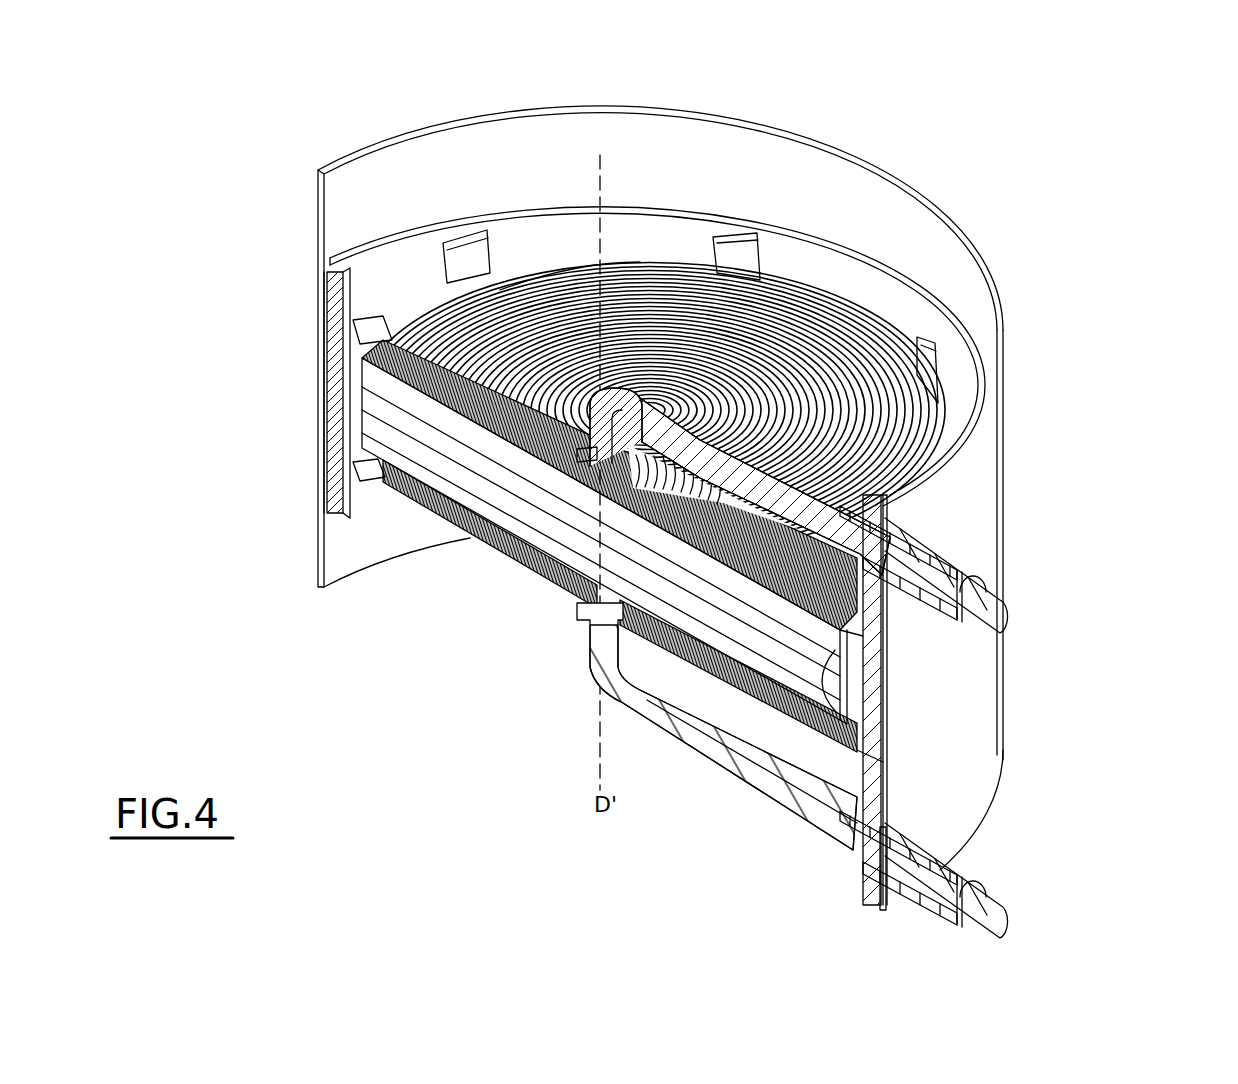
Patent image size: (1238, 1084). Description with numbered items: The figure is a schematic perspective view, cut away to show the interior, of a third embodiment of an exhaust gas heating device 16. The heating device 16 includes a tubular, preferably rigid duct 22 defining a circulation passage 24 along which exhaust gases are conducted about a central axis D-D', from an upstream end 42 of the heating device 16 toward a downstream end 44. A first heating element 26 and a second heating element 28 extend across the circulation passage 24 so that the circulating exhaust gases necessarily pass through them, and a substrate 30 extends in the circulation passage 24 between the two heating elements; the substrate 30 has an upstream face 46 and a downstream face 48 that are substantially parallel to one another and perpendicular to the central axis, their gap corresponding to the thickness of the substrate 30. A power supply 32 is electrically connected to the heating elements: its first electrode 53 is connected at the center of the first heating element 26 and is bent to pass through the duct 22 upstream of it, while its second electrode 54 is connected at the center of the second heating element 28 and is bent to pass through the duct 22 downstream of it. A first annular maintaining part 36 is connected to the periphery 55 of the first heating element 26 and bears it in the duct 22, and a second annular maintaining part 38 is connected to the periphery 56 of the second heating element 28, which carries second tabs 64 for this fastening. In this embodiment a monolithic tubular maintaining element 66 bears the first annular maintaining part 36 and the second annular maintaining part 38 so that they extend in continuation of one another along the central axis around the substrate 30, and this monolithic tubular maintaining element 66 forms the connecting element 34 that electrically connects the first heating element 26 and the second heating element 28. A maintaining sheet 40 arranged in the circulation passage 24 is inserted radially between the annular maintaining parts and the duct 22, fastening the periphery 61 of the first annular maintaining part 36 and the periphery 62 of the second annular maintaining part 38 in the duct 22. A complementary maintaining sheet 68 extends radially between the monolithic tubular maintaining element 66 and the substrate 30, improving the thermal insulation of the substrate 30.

The heating device 16 is at (1050, 211).
The duct 22 is at (958, 290).
The circulation passage 24 is at (512, 632).
The first heating element 26 is at (800, 727).
The second heating element 28 is at (925, 413).
The substrate 30 is at (850, 716).
The power supply 32 is at (1012, 576).
The connecting element 34 is at (320, 556).
The first annular maintaining part 36 is at (338, 482).
The second annular maintaining part 38 is at (335, 335).
The maintaining sheet 40 is at (325, 430).
The upstream end 42 is at (884, 907).
The downstream end 44 is at (930, 178).
The upstream face 46 is at (458, 485).
The downstream face 48 is at (412, 374).
The first electrode 53 is at (1002, 928).
The second electrode 54 is at (1002, 616).
The periphery of the first heating element 55 is at (884, 757).
The periphery of the second heating element 56 is at (551, 260).
The periphery of the first annular maintaining part 61 is at (866, 806).
The periphery of the second annular maintaining part 62 is at (887, 603).
The second tabs 64 is at (472, 253).
The monolithic tubular maintaining element 66 is at (346, 390).
The complementary maintaining sheet 68 is at (850, 688).